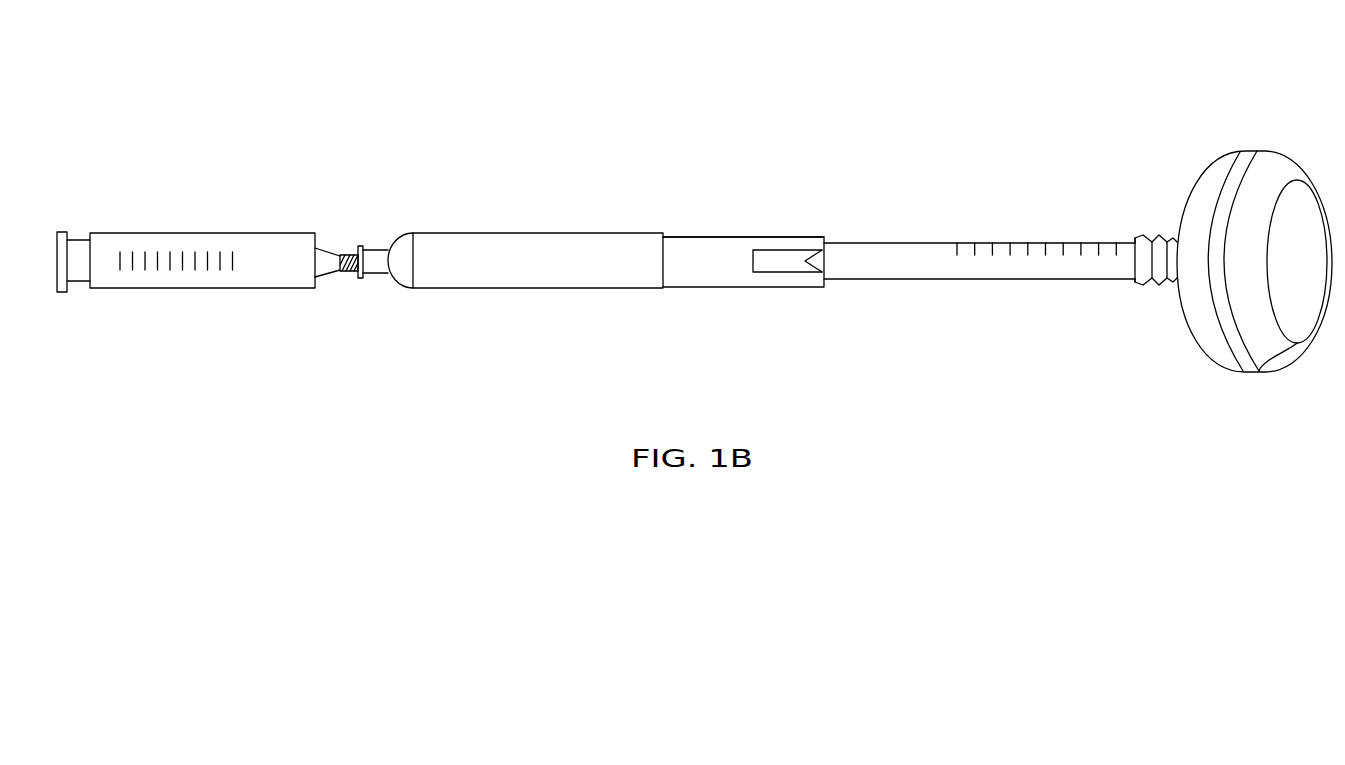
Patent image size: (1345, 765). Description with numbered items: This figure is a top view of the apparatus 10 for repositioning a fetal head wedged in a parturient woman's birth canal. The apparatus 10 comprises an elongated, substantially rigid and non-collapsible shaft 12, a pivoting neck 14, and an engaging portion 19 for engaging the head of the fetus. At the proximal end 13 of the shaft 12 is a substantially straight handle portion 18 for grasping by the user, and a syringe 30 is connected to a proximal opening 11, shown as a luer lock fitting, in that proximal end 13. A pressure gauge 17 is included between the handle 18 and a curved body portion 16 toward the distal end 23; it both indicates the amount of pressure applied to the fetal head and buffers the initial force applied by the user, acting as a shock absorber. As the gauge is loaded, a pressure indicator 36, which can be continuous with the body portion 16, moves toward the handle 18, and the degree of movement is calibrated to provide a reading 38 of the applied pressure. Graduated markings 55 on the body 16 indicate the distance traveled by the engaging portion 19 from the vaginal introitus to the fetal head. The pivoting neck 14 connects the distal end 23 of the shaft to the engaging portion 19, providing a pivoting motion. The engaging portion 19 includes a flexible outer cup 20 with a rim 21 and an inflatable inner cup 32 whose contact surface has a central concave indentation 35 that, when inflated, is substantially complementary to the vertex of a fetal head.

The apparatus 10 is at (704, 133).
The proximal opening 11 is at (372, 280).
The shaft 12 is at (637, 286).
The proximal end 13 is at (363, 221).
The pivoting neck 14 is at (1156, 237).
The curved body portion 16 is at (882, 243).
The pressure gauge 17 is at (744, 236).
The handle portion 18 is at (534, 243).
The engaging portion 19 is at (1233, 231).
The flexible outer cup 20 is at (1185, 330).
The rim 21 is at (1252, 372).
The distal end 23 is at (979, 260).
The syringe 30 is at (197, 232).
The inflatable inner cup 32 is at (1280, 352).
The central concave indentation 35 is at (1295, 197).
The pressure indicator 36 is at (818, 266).
The reading 38 is at (781, 310).
The graduated markings 55 is at (1036, 193).